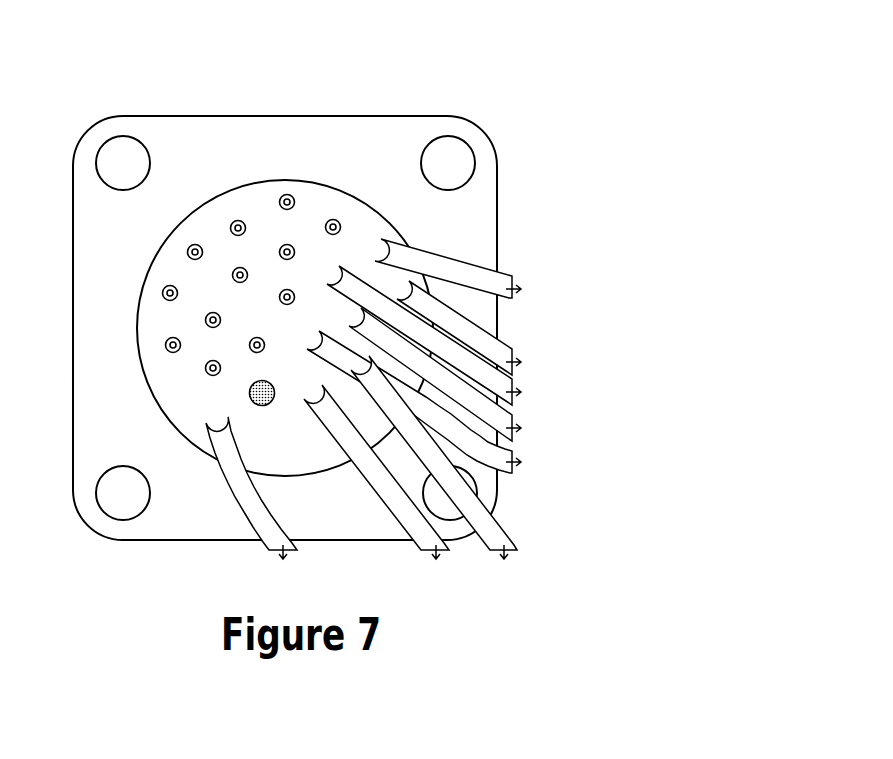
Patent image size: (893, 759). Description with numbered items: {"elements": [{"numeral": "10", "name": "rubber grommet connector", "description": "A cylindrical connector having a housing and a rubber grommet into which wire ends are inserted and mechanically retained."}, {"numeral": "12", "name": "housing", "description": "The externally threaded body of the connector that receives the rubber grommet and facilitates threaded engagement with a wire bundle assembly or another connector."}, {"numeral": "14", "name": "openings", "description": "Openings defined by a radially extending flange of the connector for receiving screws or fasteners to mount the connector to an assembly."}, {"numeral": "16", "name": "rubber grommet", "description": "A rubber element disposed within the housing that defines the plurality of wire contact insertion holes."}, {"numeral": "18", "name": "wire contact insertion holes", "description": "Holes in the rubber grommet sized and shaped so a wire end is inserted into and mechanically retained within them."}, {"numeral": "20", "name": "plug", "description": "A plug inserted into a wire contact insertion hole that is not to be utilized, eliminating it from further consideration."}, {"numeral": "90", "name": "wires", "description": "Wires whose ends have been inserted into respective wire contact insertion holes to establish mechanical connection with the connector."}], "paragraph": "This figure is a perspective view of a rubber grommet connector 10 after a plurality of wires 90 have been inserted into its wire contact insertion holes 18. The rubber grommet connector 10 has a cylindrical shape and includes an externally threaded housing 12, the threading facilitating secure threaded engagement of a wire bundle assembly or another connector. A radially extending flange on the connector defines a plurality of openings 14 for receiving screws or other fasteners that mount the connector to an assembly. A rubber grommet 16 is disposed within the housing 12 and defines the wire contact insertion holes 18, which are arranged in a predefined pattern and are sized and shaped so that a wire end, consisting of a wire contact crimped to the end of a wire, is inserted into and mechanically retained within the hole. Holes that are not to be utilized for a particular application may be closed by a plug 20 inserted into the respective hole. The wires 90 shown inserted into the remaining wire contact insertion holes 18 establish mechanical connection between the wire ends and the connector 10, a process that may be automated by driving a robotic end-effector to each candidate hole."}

The connector assembly 10 is at (396, 82).
The mounting plate 12 is at (499, 208).
The mounting holes 14 is at (458, 138).
The insert face 16 is at (183, 398).
The contact cavities 18 is at (240, 220).
The filled contact cavity 20 is at (277, 400).
The wires 90 is at (472, 280).